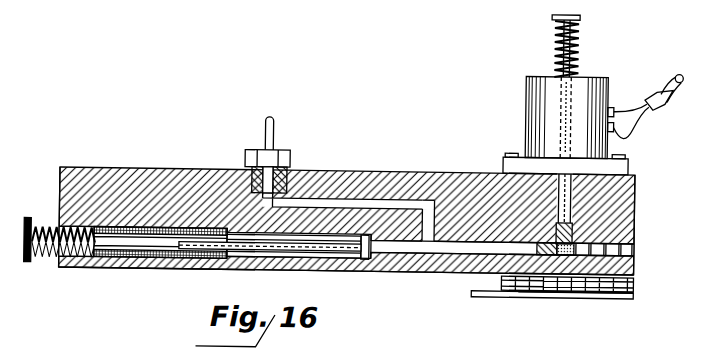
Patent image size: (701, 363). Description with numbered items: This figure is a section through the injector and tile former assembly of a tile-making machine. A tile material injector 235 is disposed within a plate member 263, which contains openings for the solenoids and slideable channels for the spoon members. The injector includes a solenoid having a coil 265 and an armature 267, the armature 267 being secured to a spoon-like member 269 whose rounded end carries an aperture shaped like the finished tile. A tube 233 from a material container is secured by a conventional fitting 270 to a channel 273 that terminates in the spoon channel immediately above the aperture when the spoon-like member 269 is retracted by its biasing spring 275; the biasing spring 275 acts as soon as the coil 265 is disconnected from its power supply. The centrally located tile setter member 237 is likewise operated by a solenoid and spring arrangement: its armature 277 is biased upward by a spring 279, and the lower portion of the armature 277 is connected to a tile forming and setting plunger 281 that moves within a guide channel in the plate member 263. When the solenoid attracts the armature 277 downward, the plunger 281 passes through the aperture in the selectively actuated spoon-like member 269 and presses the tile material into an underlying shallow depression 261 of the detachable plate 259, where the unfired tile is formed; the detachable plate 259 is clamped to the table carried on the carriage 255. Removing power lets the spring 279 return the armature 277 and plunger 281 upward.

The tube 233 is at (274, 118).
The tile material injector 235 is at (450, 296).
The tile setter member 237 is at (675, 145).
The carriage 255 is at (565, 291).
The detachable plate 259 is at (622, 279).
The shallow depression 261 is at (528, 291).
The plate member 263 is at (316, 169).
The coil 265 is at (125, 258).
The armature 267 is at (195, 250).
The spoon-like member 269 is at (446, 238).
The fitting 270 is at (244, 155).
The channel 273 is at (358, 196).
The biasing spring 275 is at (46, 206).
The armature 277 is at (526, 97).
The spring 279 is at (578, 41).
The tile forming and setting plunger 281 is at (575, 228).